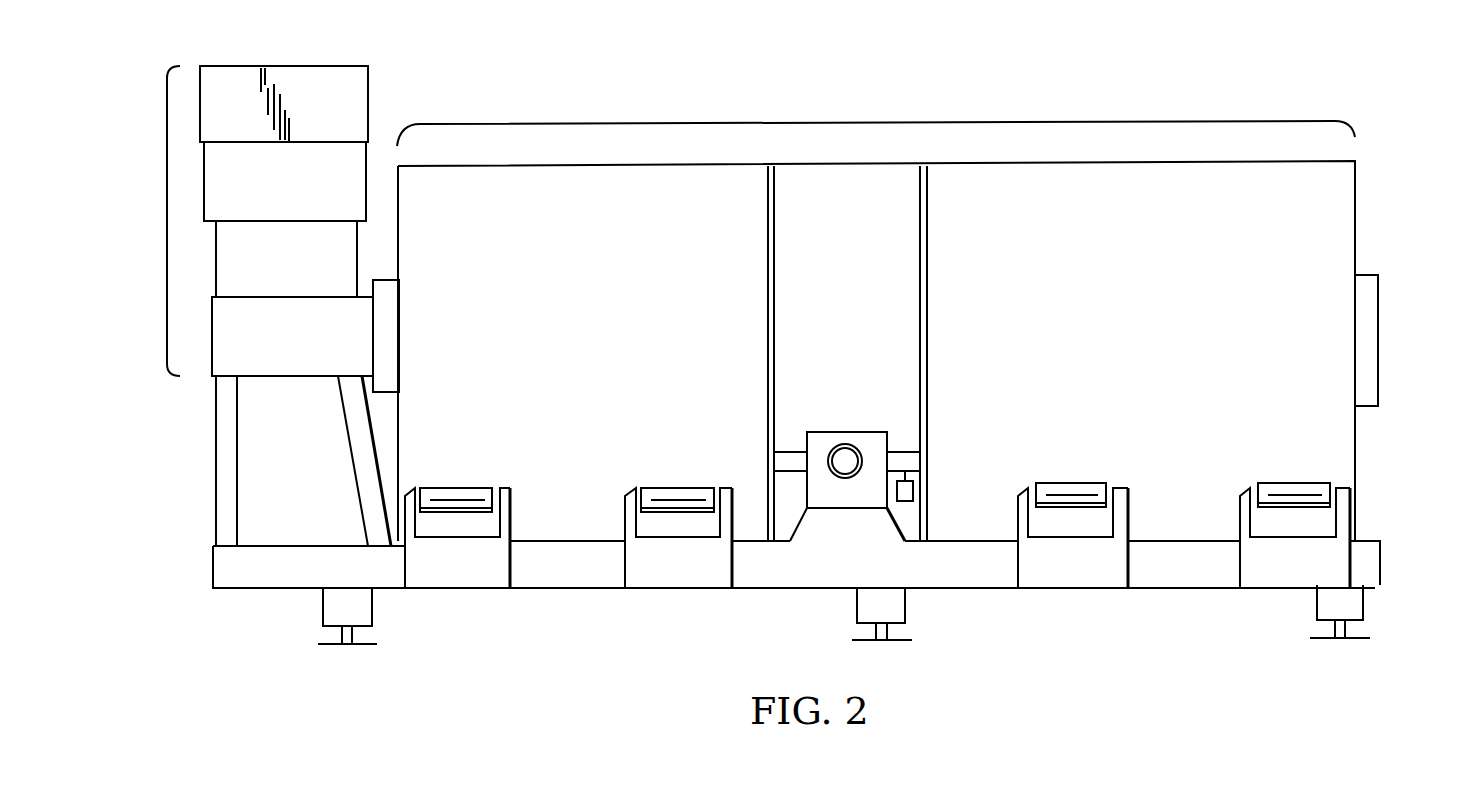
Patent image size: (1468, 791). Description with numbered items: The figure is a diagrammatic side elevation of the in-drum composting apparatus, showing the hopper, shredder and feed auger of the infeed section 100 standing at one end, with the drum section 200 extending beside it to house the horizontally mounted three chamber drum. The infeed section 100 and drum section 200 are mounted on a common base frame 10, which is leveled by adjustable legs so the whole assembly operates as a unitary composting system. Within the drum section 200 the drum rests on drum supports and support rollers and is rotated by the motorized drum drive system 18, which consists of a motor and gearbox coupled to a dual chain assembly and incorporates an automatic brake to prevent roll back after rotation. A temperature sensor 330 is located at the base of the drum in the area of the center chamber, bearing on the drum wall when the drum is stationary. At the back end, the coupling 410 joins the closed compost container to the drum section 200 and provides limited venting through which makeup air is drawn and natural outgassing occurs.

The base frame 10 is at (560, 590).
The drum drive system 18 is at (830, 432).
The infeed section 100 is at (167, 210).
The drum section 200 is at (848, 122).
The temperature sensor 330 is at (913, 491).
The coupling 410 is at (1370, 407).